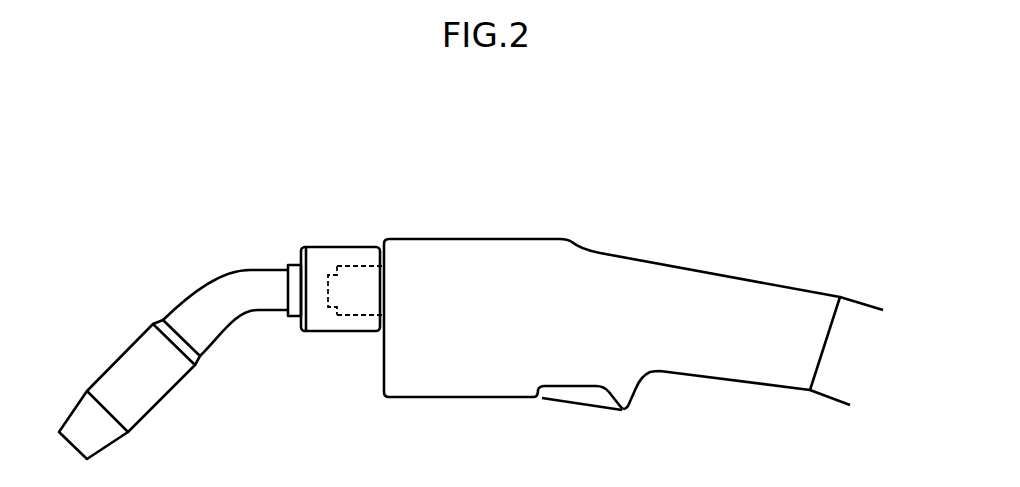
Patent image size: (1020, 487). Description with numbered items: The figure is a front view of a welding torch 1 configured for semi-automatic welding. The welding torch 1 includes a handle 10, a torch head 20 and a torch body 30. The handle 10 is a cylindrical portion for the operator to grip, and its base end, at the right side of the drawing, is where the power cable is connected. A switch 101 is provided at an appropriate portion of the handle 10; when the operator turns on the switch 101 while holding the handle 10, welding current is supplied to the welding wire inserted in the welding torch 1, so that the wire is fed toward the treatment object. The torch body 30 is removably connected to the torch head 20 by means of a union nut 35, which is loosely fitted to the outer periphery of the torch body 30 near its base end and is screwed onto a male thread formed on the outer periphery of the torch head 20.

The welding torch 1 is at (230, 167).
The handle 10 is at (698, 268).
The torch head 20 is at (352, 262).
The torch body 30 is at (248, 268).
The union nut 35 is at (327, 255).
The switch 101 is at (580, 395).